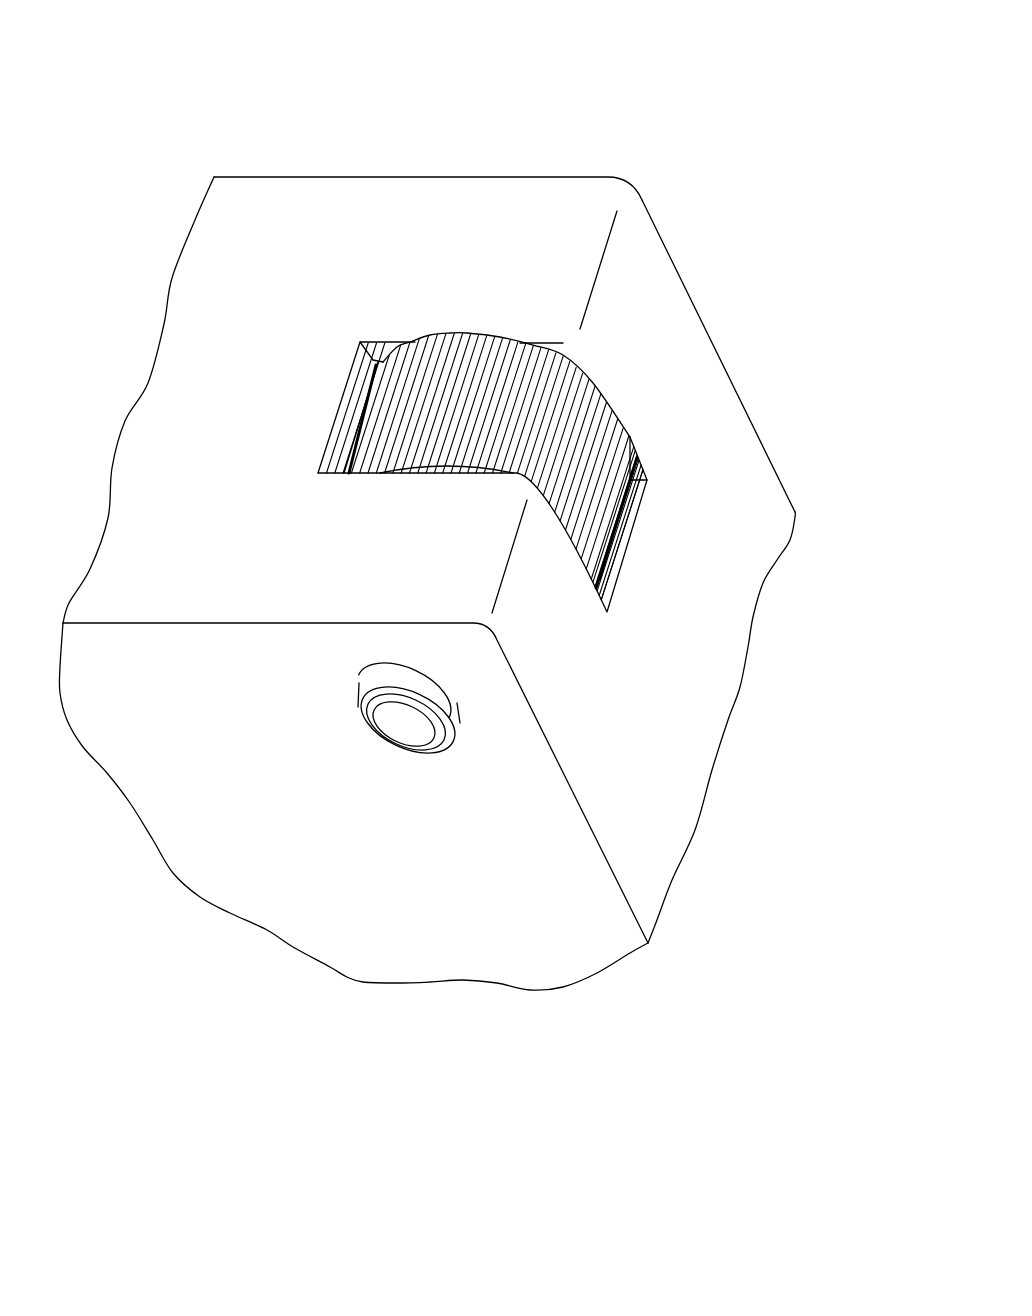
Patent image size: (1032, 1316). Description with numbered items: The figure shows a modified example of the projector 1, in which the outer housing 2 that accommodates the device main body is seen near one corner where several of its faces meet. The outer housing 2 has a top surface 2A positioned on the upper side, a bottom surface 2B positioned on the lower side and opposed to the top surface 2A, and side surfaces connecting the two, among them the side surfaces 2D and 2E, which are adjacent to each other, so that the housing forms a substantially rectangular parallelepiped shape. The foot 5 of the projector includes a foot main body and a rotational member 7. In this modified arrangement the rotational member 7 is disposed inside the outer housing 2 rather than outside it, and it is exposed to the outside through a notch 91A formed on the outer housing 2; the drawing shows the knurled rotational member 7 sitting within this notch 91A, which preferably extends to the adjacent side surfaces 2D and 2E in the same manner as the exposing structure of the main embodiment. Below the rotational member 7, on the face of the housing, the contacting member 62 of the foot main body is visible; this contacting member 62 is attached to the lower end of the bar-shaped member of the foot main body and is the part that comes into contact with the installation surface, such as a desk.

The projector 1 is at (717, 103).
The outer housing 2 is at (651, 255).
The top surface 2A is at (512, 177).
The bottom surface 2B is at (278, 903).
The side surface 2D is at (286, 205).
The side surface 2E is at (721, 429).
The foot 5 is at (840, 582).
The rotational member 7 is at (590, 478).
The contacting member 62 is at (462, 712).
The notch 91A is at (353, 388).